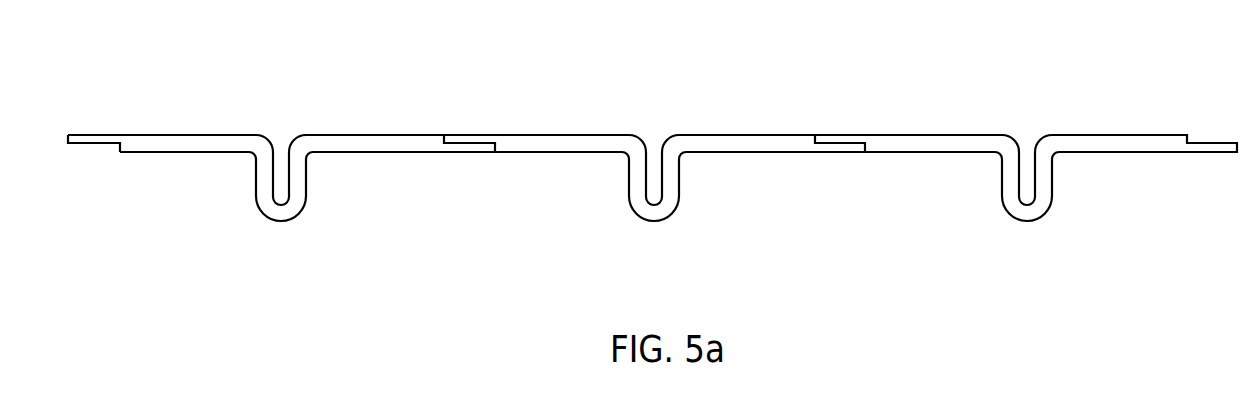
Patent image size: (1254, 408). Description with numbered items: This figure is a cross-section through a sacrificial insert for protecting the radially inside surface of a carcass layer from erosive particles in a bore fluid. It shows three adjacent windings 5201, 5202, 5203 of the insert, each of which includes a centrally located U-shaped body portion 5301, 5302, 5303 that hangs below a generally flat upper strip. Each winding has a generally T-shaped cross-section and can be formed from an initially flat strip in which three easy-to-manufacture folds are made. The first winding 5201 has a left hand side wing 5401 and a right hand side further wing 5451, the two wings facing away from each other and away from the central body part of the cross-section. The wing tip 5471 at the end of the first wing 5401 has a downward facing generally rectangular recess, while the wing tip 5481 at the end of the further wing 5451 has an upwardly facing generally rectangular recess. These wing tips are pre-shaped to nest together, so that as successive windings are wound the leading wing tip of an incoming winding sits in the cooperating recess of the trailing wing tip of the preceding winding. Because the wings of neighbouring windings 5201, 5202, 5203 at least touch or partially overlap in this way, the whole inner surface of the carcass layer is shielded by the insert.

The first winding 5201 is at (284, 171).
The second winding 5202 is at (657, 172).
The third winding 5203 is at (1030, 172).
The U-shaped body portion 5301 is at (297, 257).
The U-shaped body portion 5302 is at (670, 257).
The U-shaped body portion 5303 is at (1043, 257).
The wing 5401 is at (188, 125).
The further wing 5451 is at (467, 147).
The wing tip 5471 is at (98, 167).
The wing tip 5481 is at (483, 190).